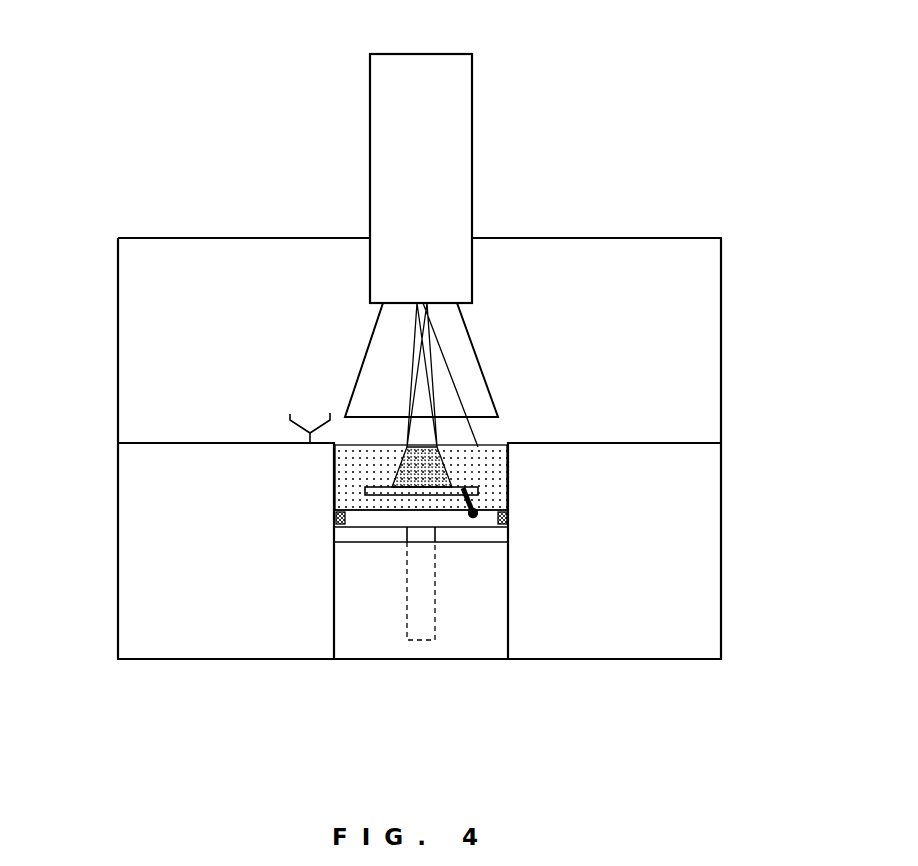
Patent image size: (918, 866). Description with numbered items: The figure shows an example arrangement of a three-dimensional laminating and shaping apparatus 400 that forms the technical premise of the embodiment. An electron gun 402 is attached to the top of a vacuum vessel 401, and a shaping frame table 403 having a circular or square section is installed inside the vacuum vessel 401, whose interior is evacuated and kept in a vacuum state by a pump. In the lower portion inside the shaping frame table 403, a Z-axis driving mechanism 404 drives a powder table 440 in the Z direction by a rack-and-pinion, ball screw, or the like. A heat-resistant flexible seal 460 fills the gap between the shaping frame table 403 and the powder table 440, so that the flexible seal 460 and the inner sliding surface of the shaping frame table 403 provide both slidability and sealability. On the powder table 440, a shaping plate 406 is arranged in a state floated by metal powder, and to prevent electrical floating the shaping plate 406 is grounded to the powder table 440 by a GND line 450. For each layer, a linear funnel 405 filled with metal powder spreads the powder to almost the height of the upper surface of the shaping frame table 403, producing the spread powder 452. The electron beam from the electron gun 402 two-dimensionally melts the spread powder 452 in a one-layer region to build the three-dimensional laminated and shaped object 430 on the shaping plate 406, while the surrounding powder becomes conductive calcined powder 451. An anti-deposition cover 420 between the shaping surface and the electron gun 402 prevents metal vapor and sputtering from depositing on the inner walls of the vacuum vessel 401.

The processing apparatus 400 is at (175, 90).
The vacuum vessel 401 is at (118, 263).
The electron gun 402 is at (472, 118).
The shaping frame table 403 is at (707, 556).
The Z-axis driving mechanism 404 is at (420, 642).
The linear funnel 405 is at (290, 422).
The shaping plate 406 is at (390, 490).
The anti-deposition cover 420 is at (476, 332).
The three-dimensional laminated and shaped object 430 is at (480, 448).
The powder table 440 is at (455, 520).
The GND line 450 is at (483, 500).
The calcined powder 451 is at (375, 458).
The spread powder 452 is at (345, 485).
The flexible seal 460 is at (510, 515).